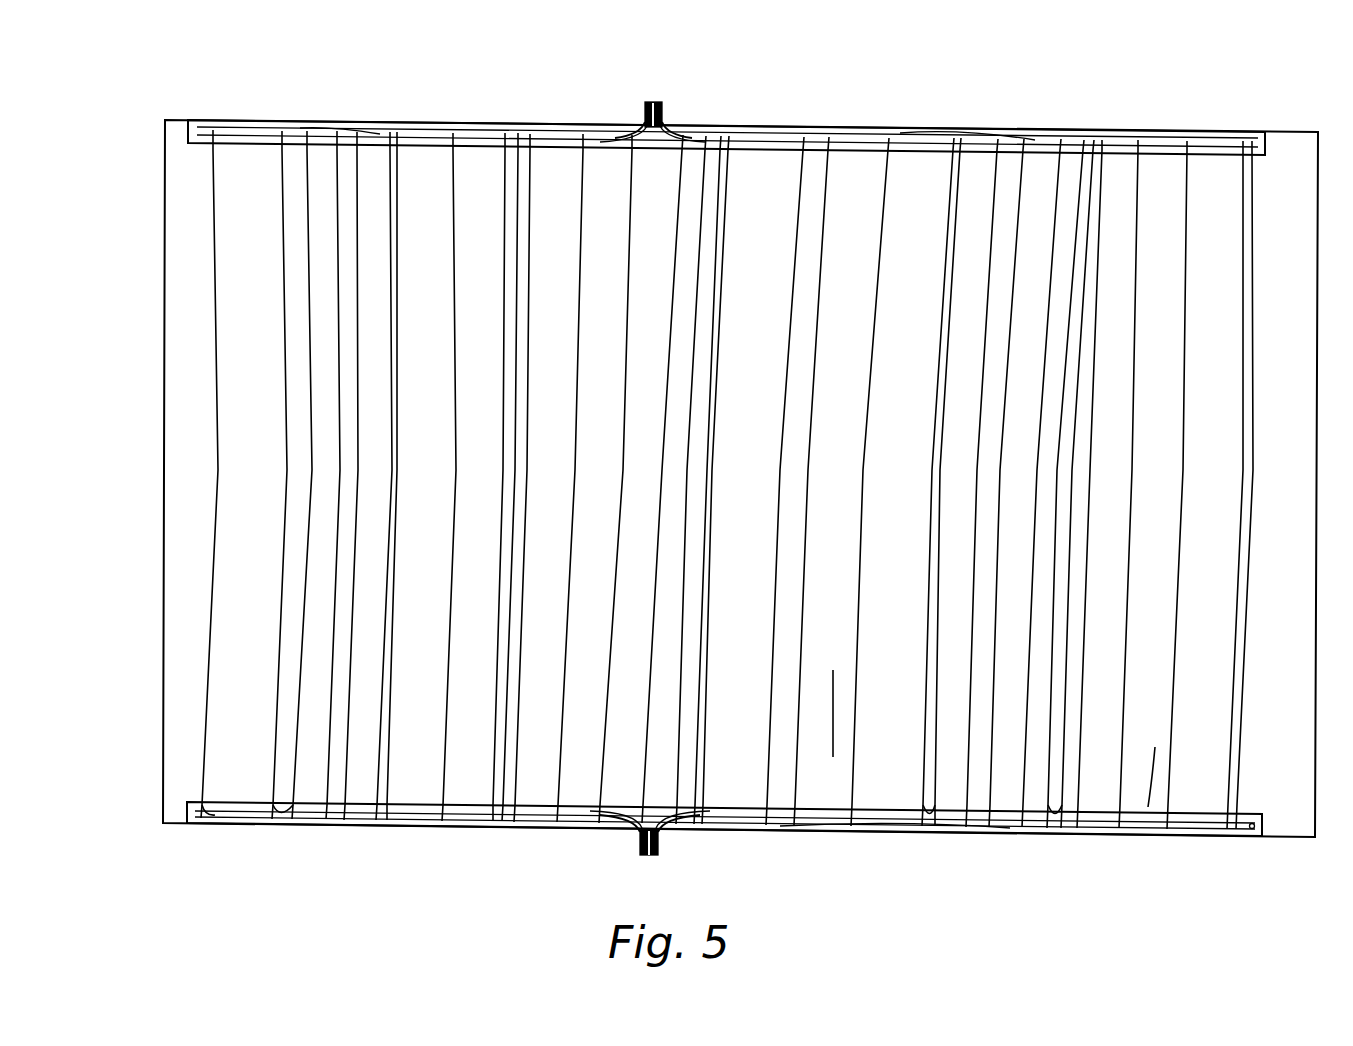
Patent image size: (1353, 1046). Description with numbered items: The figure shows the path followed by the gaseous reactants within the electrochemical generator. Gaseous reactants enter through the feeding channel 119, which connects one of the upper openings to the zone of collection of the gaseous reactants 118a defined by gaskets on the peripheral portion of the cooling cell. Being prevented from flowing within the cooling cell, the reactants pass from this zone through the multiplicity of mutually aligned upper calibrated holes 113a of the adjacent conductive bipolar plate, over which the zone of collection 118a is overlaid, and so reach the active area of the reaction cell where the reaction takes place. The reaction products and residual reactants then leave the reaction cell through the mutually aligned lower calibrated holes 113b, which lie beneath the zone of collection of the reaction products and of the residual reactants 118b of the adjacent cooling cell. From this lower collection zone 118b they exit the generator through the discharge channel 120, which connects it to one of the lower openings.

The upper calibrated holes 113a is at (200, 118).
The lower calibrated holes 113b is at (195, 832).
The zone of collection of the gaseous reactants 118a is at (950, 122).
The zone of collection of the reaction products and of the residual reactants 118b is at (925, 845).
The feeding channel 119 is at (665, 100).
The discharge channel 120 is at (664, 848).